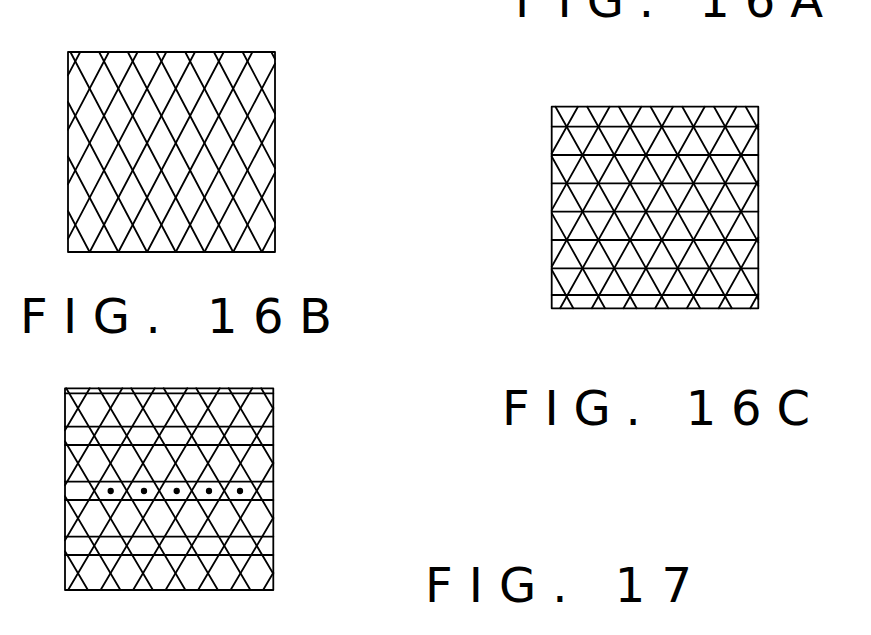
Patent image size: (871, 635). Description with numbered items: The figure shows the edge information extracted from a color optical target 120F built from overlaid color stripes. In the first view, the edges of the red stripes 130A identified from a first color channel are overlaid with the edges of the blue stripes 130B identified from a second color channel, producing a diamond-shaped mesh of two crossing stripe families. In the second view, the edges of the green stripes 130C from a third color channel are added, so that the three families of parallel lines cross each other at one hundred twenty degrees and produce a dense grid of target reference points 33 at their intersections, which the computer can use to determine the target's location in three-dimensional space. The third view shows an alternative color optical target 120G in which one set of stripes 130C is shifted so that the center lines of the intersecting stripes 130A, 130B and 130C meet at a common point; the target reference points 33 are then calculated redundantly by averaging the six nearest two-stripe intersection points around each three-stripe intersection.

In FIG. 16B, the color optical target 120F is at (286, 162).
In FIG. 16C, the color optical target 120F is at (698, 95).
In FIG. 17, the color optical target 120G is at (290, 548).
In FIG. 16B, the red stripes 130A is at (173, 72).
In FIG. 16C, the red stripes 130A is at (575, 140).
In FIG. 17, the red stripes 130A is at (245, 472).
In FIG. 16B, the blue stripes 130B is at (240, 72).
In FIG. 16C, the blue stripes 130B is at (737, 280).
In FIG. 17, the blue stripes 130B is at (266, 512).
In FIG. 16C, the green stripes 130C is at (658, 268).
In FIG. 17, the green stripes 130C is at (257, 421).
In FIG. 16C, the target reference points 33 is at (647, 150).
In FIG. 17, the target reference points 33 is at (110, 494).